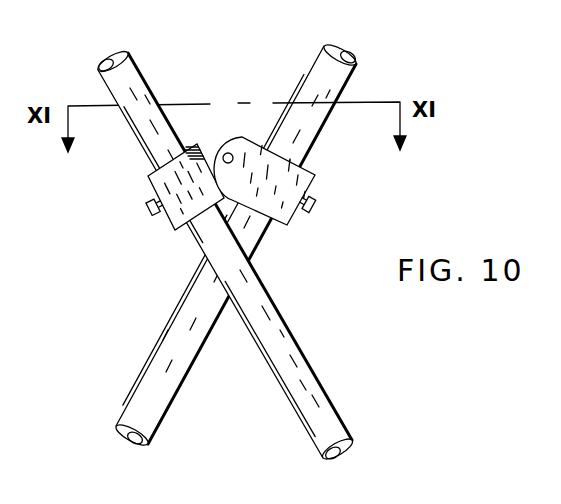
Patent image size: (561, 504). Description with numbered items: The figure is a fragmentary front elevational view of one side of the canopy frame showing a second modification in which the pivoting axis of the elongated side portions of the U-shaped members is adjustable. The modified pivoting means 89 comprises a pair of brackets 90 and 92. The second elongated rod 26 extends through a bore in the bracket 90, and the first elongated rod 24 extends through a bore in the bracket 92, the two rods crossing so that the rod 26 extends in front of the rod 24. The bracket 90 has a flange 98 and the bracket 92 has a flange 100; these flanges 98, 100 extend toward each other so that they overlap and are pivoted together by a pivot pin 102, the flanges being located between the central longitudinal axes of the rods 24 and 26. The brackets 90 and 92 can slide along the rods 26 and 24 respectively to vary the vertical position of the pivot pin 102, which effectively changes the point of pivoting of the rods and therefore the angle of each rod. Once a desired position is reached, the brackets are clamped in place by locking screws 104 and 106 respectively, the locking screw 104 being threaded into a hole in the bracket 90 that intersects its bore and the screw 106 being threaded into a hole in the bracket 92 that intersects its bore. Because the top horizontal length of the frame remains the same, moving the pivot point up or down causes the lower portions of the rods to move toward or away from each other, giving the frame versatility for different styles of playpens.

The first elongated rod 24 is at (345, 70).
The second elongated rod 26 is at (139, 71).
The modified pivoting means 89 is at (220, 58).
The bracket 90 is at (155, 171).
The bracket 92 is at (286, 226).
The flange 98 is at (202, 142).
The flange 100 is at (248, 148).
The pivot pin 102 is at (228, 153).
The locking screw 104 is at (146, 209).
The locking screw 106 is at (315, 199).